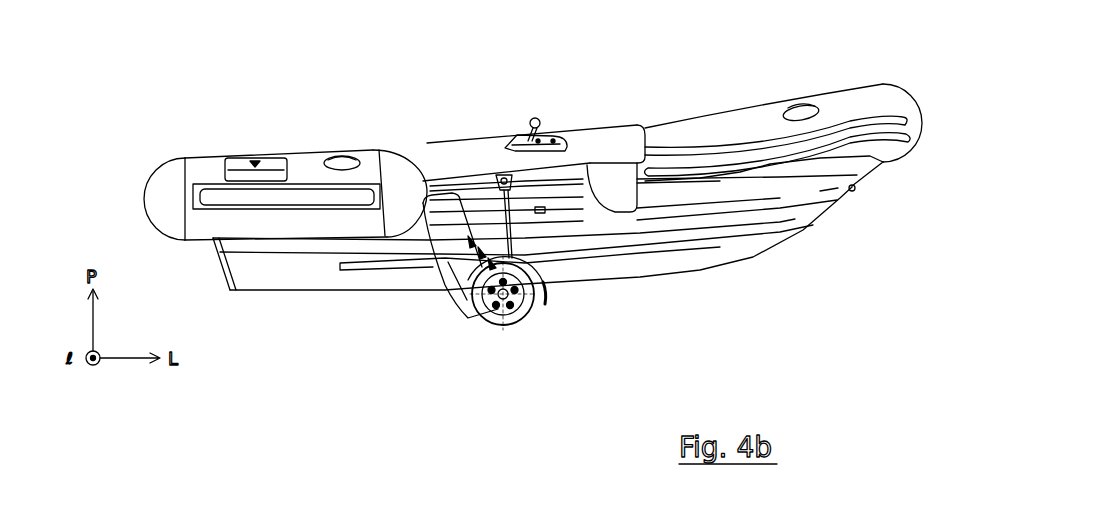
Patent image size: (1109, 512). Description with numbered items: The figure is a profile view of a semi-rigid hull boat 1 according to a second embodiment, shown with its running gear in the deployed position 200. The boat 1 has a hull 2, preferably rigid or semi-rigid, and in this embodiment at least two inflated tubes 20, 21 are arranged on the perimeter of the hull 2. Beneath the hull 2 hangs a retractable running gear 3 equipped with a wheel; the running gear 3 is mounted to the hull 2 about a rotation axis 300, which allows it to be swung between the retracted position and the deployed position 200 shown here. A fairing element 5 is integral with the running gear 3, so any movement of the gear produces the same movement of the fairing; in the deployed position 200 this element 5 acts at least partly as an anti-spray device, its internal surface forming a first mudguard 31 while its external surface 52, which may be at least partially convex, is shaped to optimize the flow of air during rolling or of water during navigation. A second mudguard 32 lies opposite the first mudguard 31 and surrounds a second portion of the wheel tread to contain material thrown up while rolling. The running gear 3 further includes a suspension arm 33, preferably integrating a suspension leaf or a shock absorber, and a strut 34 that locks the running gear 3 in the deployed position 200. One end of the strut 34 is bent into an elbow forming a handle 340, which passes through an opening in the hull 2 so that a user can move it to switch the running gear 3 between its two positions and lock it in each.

The boat 1 is at (192, 102).
The hull 2 is at (699, 117).
The inflated tube 20 is at (160, 193).
The inflated tube 21 is at (893, 101).
The running gear 3 is at (533, 350).
The first mudguard 31 is at (455, 306).
The second mudguard 32 is at (542, 290).
The suspension arm 33 is at (503, 188).
The strut 34 is at (513, 237).
The rotation axis 300 is at (424, 200).
The handle 340 is at (530, 120).
The fairing element 5 is at (446, 295).
The external surface 52 is at (433, 257).
The deployed position 200 is at (871, 339).